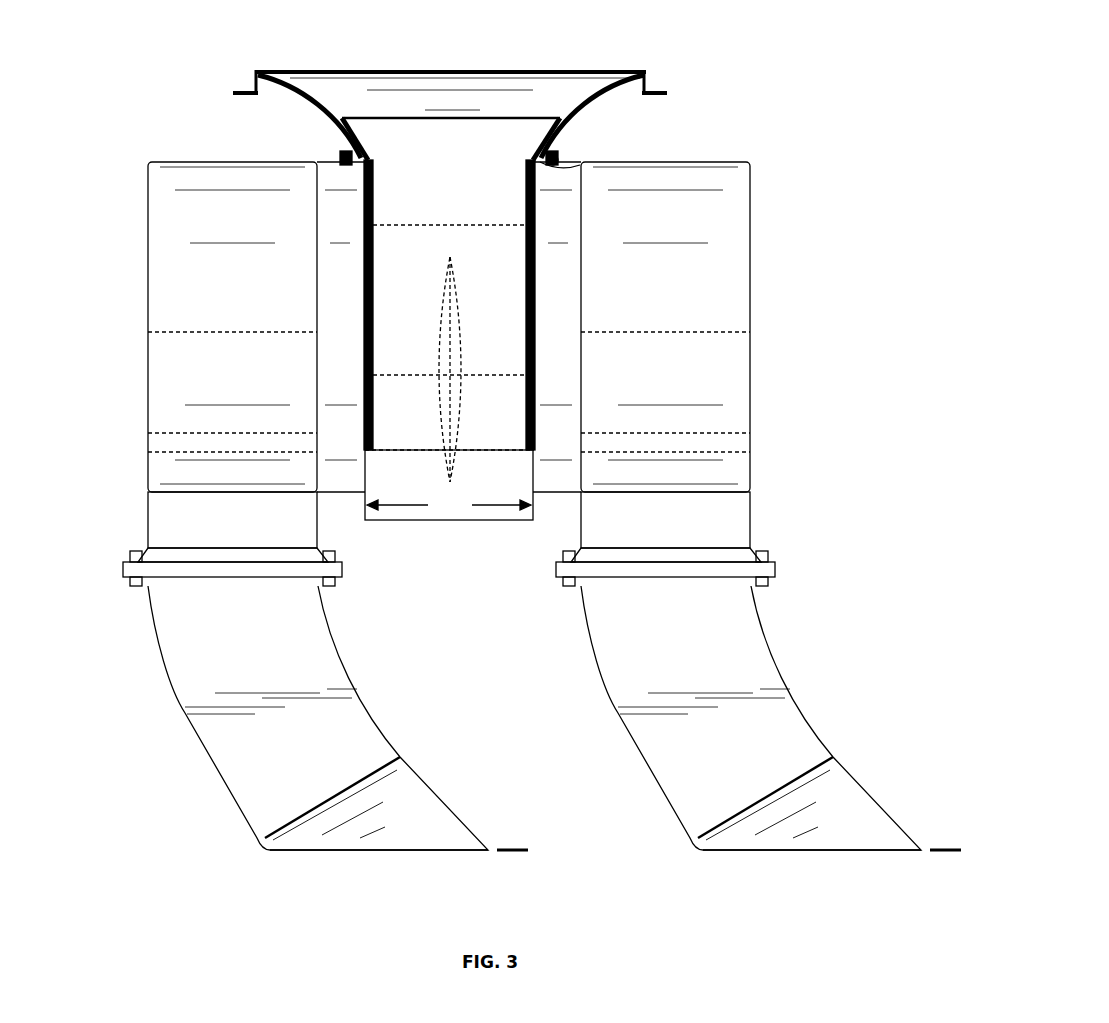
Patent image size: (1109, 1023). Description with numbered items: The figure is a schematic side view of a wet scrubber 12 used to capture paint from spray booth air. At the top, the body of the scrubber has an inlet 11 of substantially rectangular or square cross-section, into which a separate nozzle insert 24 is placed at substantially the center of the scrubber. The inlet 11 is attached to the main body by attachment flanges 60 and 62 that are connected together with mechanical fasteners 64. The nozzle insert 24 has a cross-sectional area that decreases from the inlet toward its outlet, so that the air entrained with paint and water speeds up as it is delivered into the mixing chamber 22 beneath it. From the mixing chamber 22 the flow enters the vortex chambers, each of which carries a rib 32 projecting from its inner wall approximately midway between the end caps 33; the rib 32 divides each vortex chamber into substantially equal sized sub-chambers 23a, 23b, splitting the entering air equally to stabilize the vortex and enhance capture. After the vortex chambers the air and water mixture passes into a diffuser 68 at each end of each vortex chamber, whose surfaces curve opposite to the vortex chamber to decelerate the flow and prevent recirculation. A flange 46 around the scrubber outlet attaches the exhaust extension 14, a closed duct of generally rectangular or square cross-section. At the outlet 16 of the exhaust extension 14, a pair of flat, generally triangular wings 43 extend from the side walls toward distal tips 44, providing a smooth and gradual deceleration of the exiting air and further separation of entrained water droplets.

The inlet 11 is at (618, 70).
The wet scrubber 12 is at (308, 144).
The exhaust extension 14 is at (168, 677).
The outlet 16 is at (447, 800).
The mixing chamber 22 is at (415, 222).
The sub-chamber 23a is at (247, 286).
The sub-chamber 23b is at (669, 284).
The nozzle insert 24 is at (452, 138).
The rib 32 is at (465, 335).
The end cap 33 is at (148, 236).
The wing 43 is at (363, 852).
The tip 44 is at (743, 849).
The flange 46 is at (168, 548).
The attachment flange 60 is at (561, 160).
The attachment flange 62 is at (579, 166).
The mechanical fastener 64 is at (552, 153).
The diffuser 68 is at (243, 531).